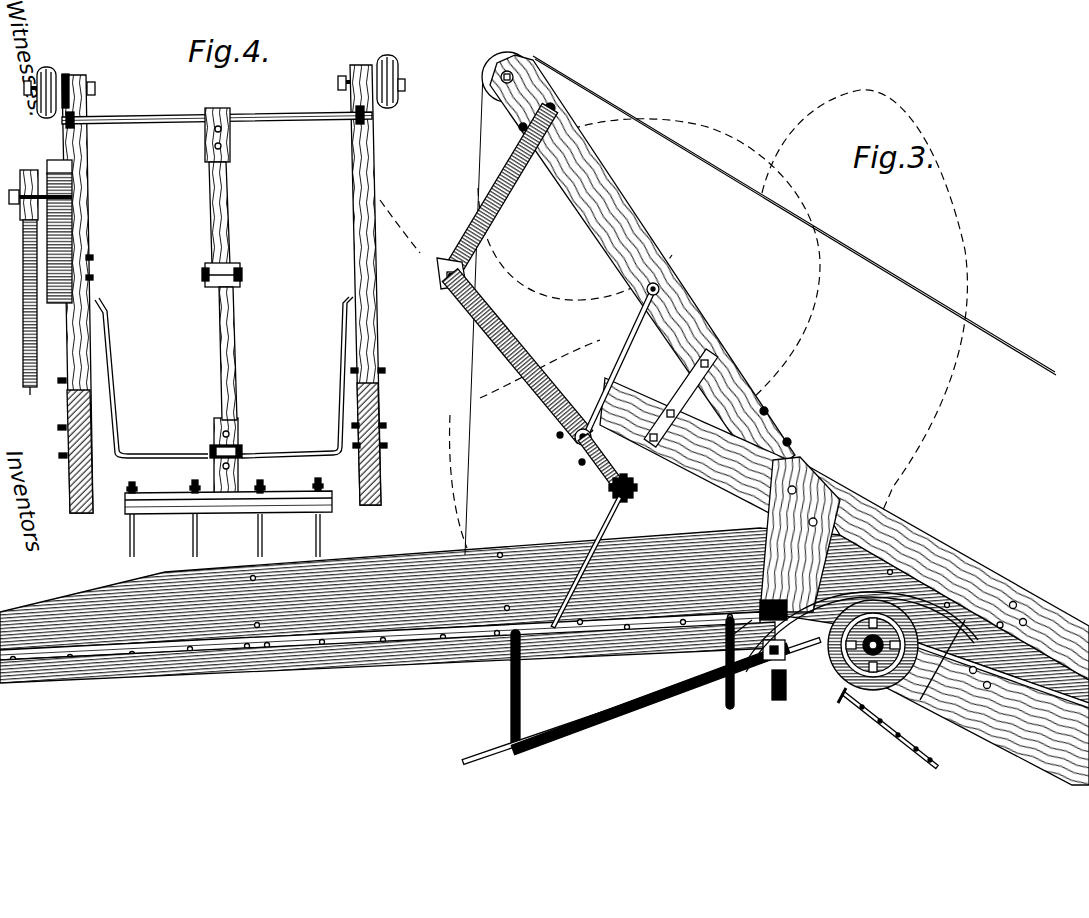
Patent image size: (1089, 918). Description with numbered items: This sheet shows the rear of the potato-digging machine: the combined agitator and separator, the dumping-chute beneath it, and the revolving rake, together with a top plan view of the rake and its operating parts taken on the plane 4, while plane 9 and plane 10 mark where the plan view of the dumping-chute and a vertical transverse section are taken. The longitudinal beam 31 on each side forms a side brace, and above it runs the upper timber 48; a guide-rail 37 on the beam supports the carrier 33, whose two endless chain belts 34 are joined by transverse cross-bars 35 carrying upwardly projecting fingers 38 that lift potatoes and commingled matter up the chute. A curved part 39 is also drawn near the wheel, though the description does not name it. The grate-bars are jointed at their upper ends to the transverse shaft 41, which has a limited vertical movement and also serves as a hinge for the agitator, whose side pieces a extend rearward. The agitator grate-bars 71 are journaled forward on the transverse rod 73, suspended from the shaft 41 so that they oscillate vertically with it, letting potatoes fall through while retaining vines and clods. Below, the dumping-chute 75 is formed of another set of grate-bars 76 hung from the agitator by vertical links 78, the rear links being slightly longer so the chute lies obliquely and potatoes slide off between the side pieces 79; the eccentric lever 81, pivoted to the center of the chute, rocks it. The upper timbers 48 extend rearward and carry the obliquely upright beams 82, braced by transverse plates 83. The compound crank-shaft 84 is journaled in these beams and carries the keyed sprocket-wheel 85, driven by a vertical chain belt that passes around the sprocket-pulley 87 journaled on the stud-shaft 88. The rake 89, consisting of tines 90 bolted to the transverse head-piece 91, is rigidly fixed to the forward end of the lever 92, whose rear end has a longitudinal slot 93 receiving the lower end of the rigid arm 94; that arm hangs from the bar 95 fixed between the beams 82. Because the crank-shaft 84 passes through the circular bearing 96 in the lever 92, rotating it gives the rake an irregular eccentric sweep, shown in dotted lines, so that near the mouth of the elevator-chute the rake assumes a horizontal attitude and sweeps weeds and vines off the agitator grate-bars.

In FIG. 3, the side piece a is at (544, 615).
In FIG. 3, the plane 4 is at (733, 520).
In FIG. 3, the plane 9 is at (590, 712).
In FIG. 3, the plane 10 is at (633, 765).
In FIG. 3, the beam 31 is at (988, 708).
In FIG. 3, the carrier 33 is at (941, 645).
In FIG. 3, the endless chain belt 34 is at (881, 645).
In FIG. 3, the cross-bar 35 is at (905, 697).
In FIG. 3, the guide-rail 37 is at (1022, 648).
In FIG. 3, the finger 38 is at (850, 702).
In FIG. 3, the curved band 39 is at (893, 601).
In FIG. 3, the transverse shaft 41 is at (738, 603).
In FIG. 4, the upper timber 48 is at (72, 480).
In FIG. 3, the upper timber 48 is at (993, 588).
In FIG. 3, the grate-bar 71 is at (393, 670).
In FIG. 3, the transverse rod 73 is at (786, 659).
In FIG. 3, the dumping-chute 75 is at (597, 740).
In FIG. 3, the grate-bar 76 is at (647, 725).
In FIG. 3, the vertical link 78 is at (615, 682).
In FIG. 3, the side piece 79 is at (692, 715).
In FIG. 3, the eccentric lever 81 is at (649, 688).
In FIG. 4, the obliquely-upright beam 82 is at (87, 224).
In FIG. 3, the obliquely-upright beam 82 is at (647, 253).
In FIG. 3, the transverse plate 83 is at (683, 373).
In FIG. 4, the compound crank-shaft 84 is at (172, 457).
In FIG. 4, the sprocket-wheel 85 is at (27, 341).
In FIG. 4, the sprocket-pulley 87 is at (38, 178).
In FIG. 4, the stud-shaft 88 is at (36, 215).
In FIG. 3, the stud-shaft 88 is at (610, 380).
In FIG. 4, the rake 89 is at (227, 530).
In FIG. 3, the rake 89 is at (601, 472).
In FIG. 4, the tine 90 is at (192, 537).
In FIG. 3, the tine 90 is at (563, 569).
In FIG. 4, the transverse head-piece 91 is at (167, 494).
In FIG. 3, the transverse head-piece 91 is at (634, 490).
In FIG. 4, the lever 92 is at (234, 366).
In FIG. 3, the lever 92 is at (517, 356).
In FIG. 3, the longitudinal slot 93 is at (458, 296).
In FIG. 4, the rigid arm 94 is at (225, 208).
In FIG. 3, the rigid arm 94 is at (497, 222).
In FIG. 3, the bar 95 is at (556, 108).
In FIG. 4, the circular bearing 96 is at (265, 114).
In FIG. 3, the circular bearing 96 is at (594, 440).